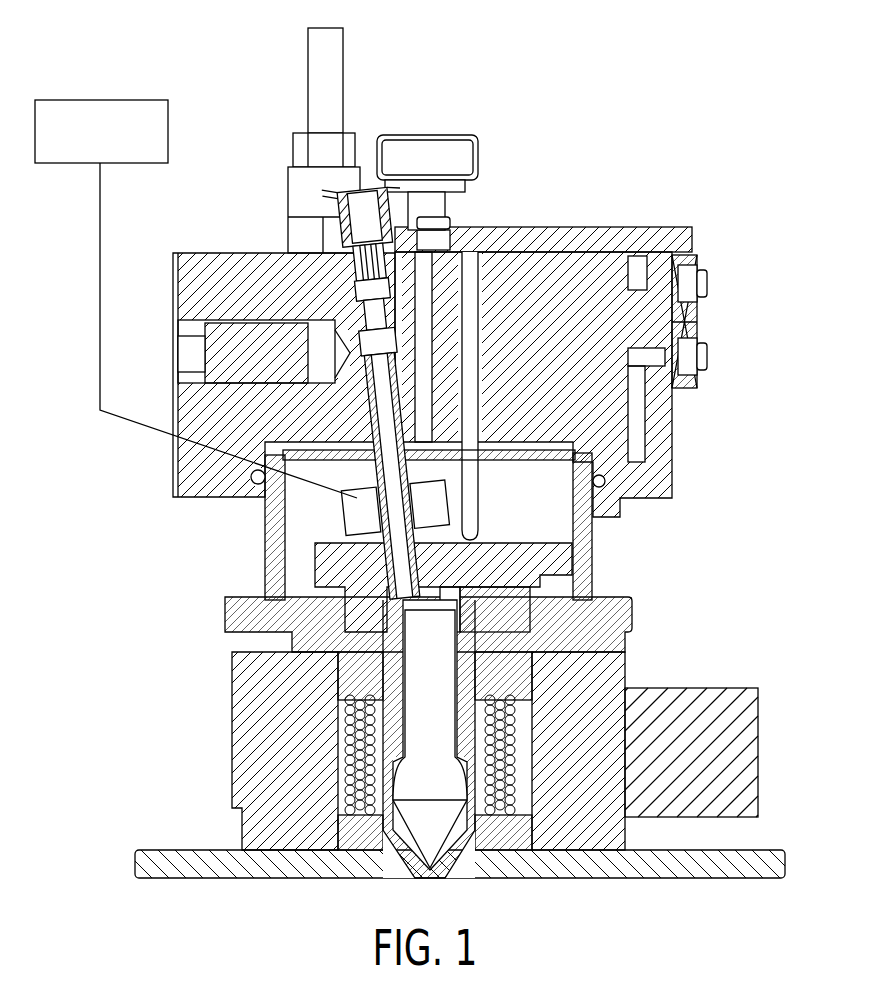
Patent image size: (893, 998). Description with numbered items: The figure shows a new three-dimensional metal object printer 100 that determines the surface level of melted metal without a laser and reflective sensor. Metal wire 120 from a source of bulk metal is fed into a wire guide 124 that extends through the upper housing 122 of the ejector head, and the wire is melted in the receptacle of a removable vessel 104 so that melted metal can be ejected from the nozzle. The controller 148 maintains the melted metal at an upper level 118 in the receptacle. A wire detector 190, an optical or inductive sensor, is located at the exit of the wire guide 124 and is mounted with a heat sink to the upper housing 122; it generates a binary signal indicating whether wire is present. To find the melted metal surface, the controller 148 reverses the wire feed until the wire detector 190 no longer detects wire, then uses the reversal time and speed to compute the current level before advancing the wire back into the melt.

The 3D metal object printer 100 is at (693, 140).
The controller 148 is at (110, 99).
The upper housing 122 is at (180, 252).
The wire guide 124 is at (382, 432).
The wire detector 190 is at (365, 516).
The metal wire 120 is at (403, 568).
The upper level 118 is at (393, 612).
The removable vessel 104 is at (433, 695).